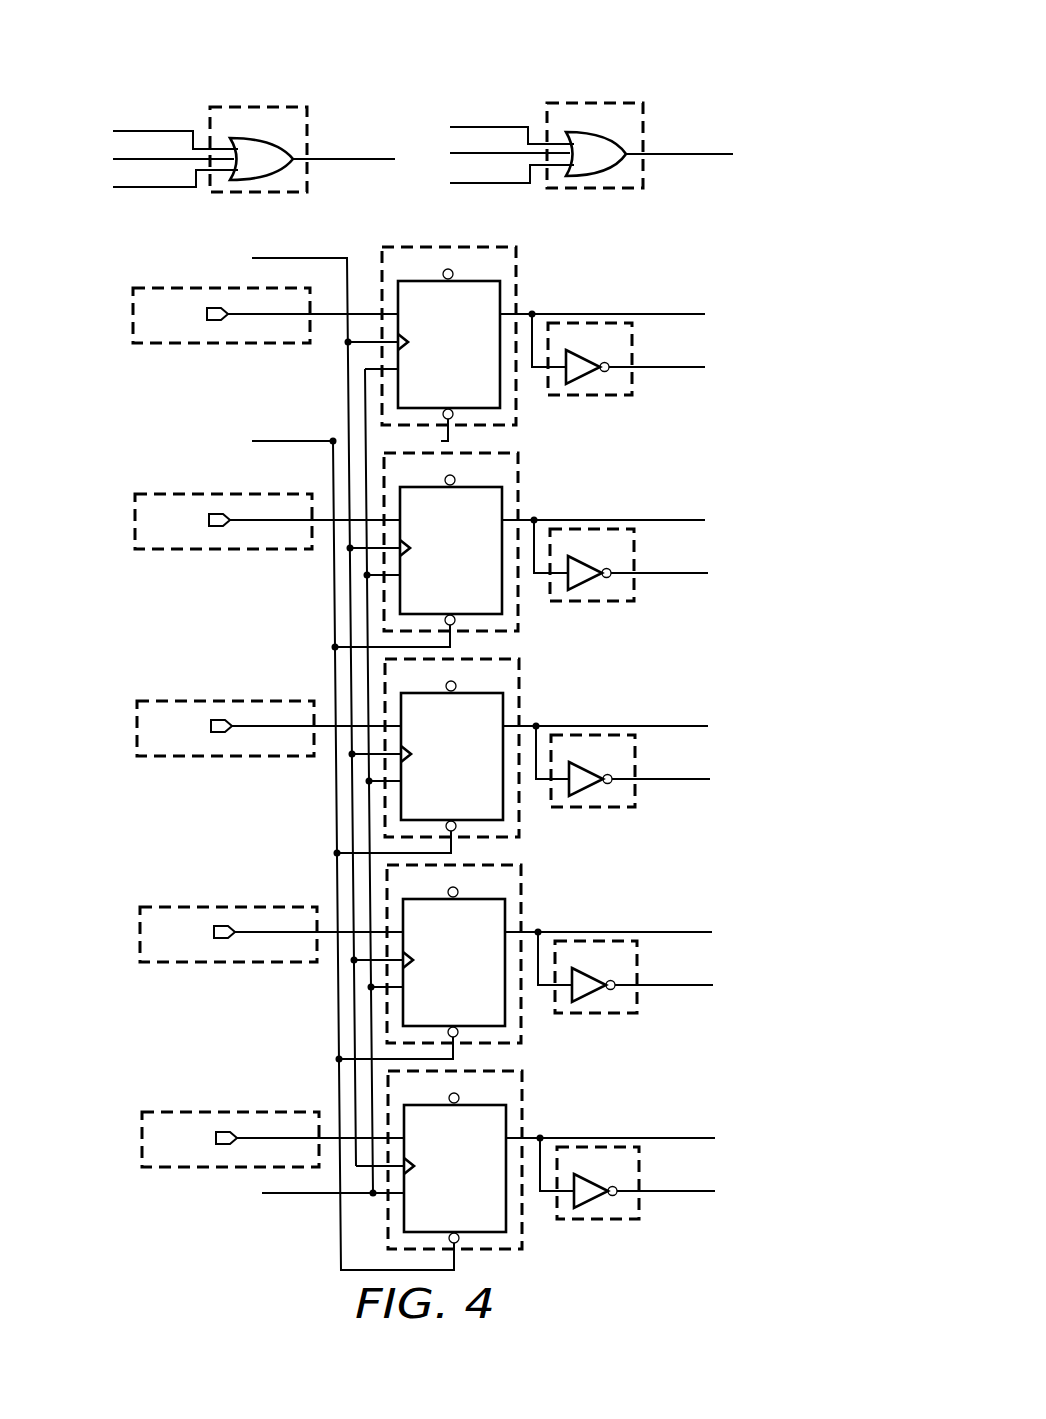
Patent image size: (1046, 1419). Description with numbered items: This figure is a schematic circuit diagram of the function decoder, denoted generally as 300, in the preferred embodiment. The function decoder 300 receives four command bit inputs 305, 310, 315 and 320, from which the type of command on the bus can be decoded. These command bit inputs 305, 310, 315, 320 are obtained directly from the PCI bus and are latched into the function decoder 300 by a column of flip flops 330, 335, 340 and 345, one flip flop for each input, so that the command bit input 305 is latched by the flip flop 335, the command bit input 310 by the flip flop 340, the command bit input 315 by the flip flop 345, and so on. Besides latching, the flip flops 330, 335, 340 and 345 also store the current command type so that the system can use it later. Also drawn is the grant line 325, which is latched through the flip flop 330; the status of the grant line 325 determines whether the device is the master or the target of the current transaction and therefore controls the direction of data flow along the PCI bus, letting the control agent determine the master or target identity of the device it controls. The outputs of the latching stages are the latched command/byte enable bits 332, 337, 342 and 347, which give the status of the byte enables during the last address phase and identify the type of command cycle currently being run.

The function decoder 300 is at (435, 60).
The command bit input 305 is at (135, 522).
The command bit input 310 is at (137, 730).
The command bit input 315 is at (140, 930).
The command bit input 320 is at (142, 1136).
The grant line 325 is at (133, 312).
The flip flop 330 is at (516, 277).
The latched command/byte enable bit 332 is at (705, 518).
The flip flop 335 is at (518, 483).
The latched command/byte enable bit 337 is at (708, 725).
The flip flop 340 is at (519, 690).
The latched command/byte enable bit 342 is at (712, 931).
The flip flop 345 is at (521, 895).
The latched command/byte enable bit 347 is at (715, 1137).